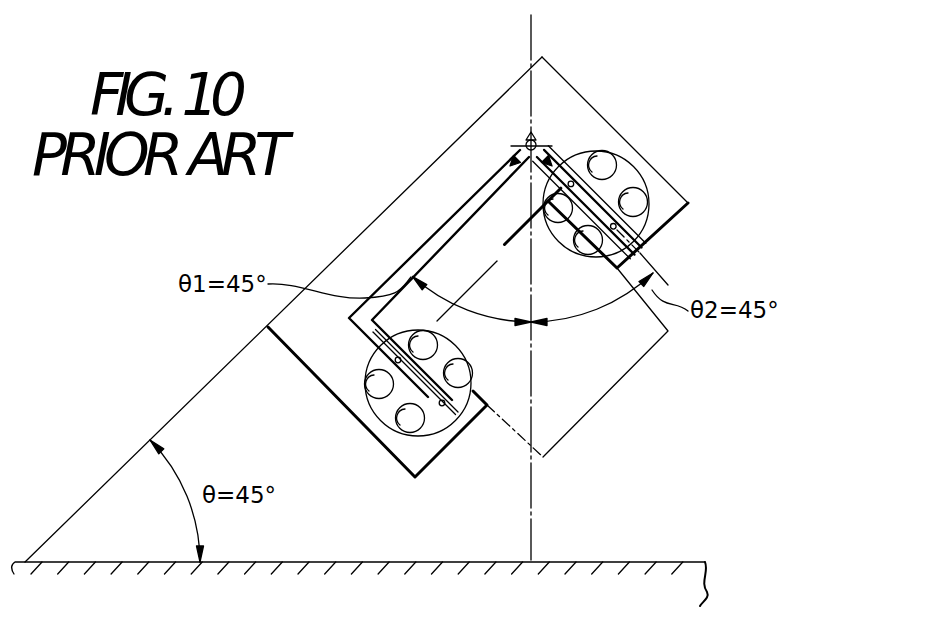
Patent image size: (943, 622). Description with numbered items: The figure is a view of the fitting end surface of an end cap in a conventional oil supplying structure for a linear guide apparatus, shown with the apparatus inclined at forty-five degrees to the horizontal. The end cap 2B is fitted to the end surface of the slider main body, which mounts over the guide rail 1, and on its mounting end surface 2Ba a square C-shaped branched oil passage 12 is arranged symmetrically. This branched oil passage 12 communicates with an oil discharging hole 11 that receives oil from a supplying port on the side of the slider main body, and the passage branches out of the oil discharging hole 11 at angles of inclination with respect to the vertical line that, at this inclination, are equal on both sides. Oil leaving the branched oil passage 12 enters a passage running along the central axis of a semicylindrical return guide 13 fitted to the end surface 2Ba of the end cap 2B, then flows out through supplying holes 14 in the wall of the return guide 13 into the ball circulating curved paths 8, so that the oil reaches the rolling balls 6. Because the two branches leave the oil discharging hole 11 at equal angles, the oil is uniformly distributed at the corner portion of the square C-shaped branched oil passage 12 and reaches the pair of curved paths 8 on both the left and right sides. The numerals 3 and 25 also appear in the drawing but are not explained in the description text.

The guide rail 1 is at (628, 370).
The end cap 2B is at (581, 83).
The mounting end surface 2Ba is at (437, 163).
The guide roller 3 is at (553, 224).
The rolling balls 6 is at (522, 233).
The ball circulating curved paths 8 is at (610, 158).
The oil discharging hole 11 is at (552, 150).
The branched oil passage 12 is at (432, 237).
The return guide 13 is at (608, 222).
The supplying holes 14 is at (582, 189).
The pivot 25 is at (530, 152).